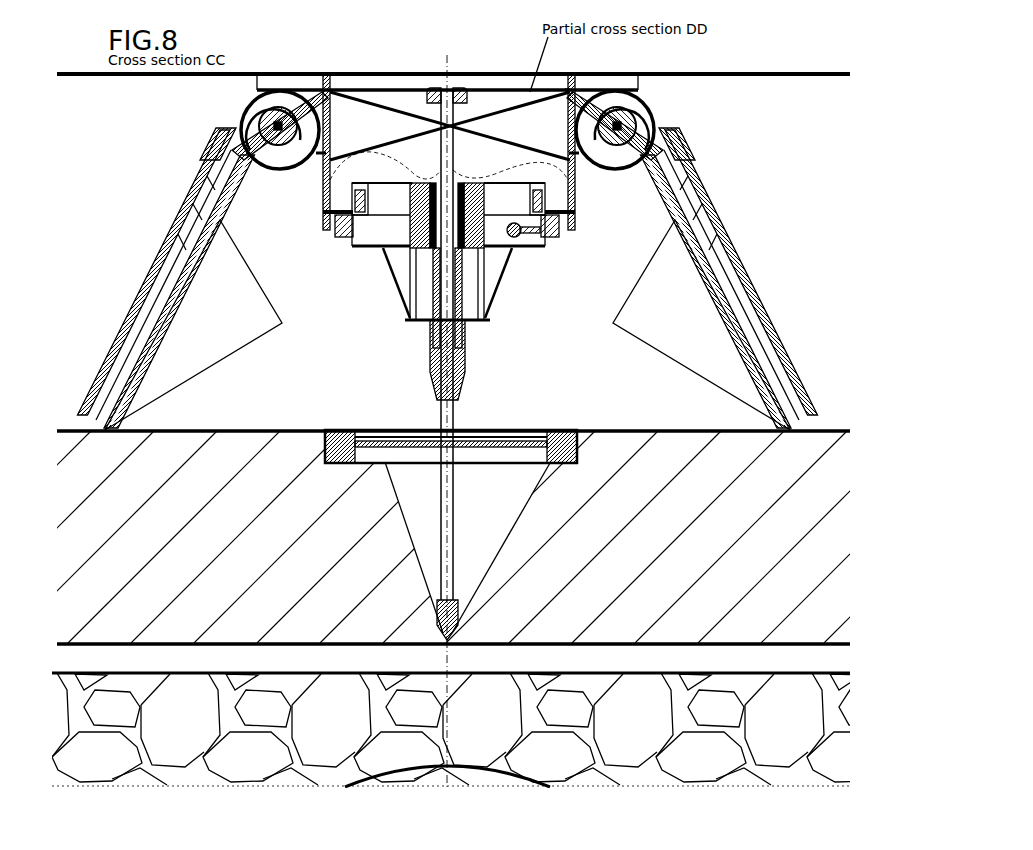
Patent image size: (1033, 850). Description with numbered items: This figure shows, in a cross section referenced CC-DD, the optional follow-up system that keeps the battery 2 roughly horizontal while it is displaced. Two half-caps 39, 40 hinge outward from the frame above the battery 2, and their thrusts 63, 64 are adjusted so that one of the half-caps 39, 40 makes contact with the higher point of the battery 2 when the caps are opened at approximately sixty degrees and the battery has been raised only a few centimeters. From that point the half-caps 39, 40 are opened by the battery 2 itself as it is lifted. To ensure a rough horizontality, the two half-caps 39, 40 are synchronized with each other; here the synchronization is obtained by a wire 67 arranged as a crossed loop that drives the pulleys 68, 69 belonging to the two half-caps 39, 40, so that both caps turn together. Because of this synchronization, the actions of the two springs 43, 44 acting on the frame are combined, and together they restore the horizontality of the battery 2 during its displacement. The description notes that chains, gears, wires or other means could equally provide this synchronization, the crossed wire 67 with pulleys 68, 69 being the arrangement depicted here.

The battery 2 is at (640, 440).
The half-cap 39 is at (665, 320).
The half-cap 40 is at (210, 327).
The spring 43 is at (578, 115).
The spring 44 is at (323, 90).
The thrust 63 is at (682, 138).
The thrust 64 is at (213, 138).
The wire 67 is at (497, 120).
The pulley 68 is at (620, 100).
The pulley 69 is at (287, 92).